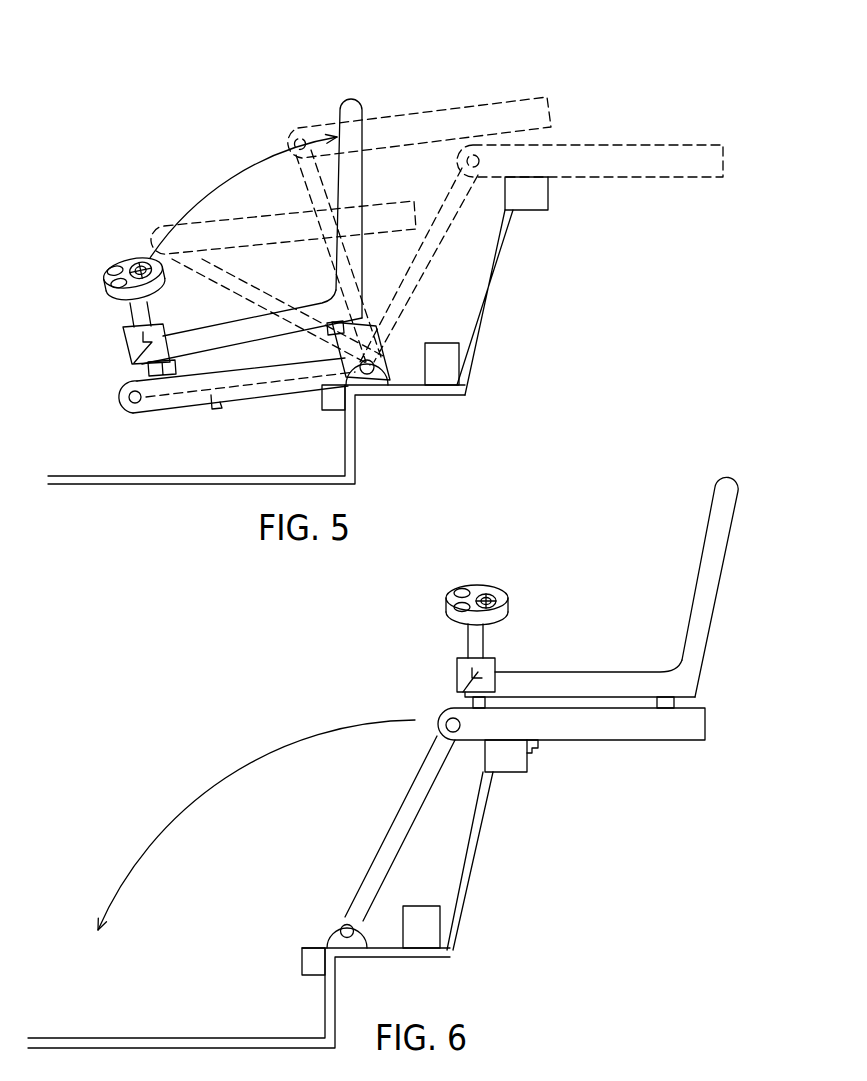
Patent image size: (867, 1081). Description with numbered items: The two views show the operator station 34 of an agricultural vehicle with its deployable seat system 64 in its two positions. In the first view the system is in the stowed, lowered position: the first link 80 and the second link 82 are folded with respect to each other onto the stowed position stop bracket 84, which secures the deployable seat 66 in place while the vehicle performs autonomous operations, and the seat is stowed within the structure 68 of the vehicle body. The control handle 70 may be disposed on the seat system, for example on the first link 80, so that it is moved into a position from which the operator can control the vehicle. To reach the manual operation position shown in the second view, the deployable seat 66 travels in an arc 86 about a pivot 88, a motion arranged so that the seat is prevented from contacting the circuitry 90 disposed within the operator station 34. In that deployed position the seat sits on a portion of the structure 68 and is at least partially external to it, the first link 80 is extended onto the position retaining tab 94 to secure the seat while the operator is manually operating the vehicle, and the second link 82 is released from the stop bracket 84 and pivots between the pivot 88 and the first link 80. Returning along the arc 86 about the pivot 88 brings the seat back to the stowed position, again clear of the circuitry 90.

In FIG. 5, the operator station 34 is at (212, 116).
In FIG. 6, the operator station 34 is at (607, 570).
In FIG. 5, the deployable seat system 64 is at (86, 353).
In FIG. 6, the deployable seat system 64 is at (221, 713).
In FIG. 5, the deployable seat 66 is at (363, 109).
In FIG. 6, the deployable seat 66 is at (698, 578).
In FIG. 5, the structure 68 is at (533, 233).
In FIG. 6, the structure 68 is at (511, 796).
In FIG. 5, the control handle 70 is at (112, 263).
In FIG. 5, the first link 80 is at (380, 342).
In FIG. 6, the first link 80 is at (690, 725).
In FIG. 5, the second link 82 is at (232, 373).
In FIG. 6, the second link 82 is at (392, 822).
In FIG. 5, the stowed position stop bracket 84 is at (336, 395).
In FIG. 6, the stowed position stop bracket 84 is at (315, 960).
In FIG. 5, the arc 86 is at (228, 181).
In FIG. 6, the arc 86 is at (228, 773).
In FIG. 5, the pivot 88 is at (370, 374).
In FIG. 5, the circuitry 90 is at (448, 362).
In FIG. 6, the circuitry 90 is at (425, 935).
In FIG. 6, the position retaining tab 94 is at (540, 752).